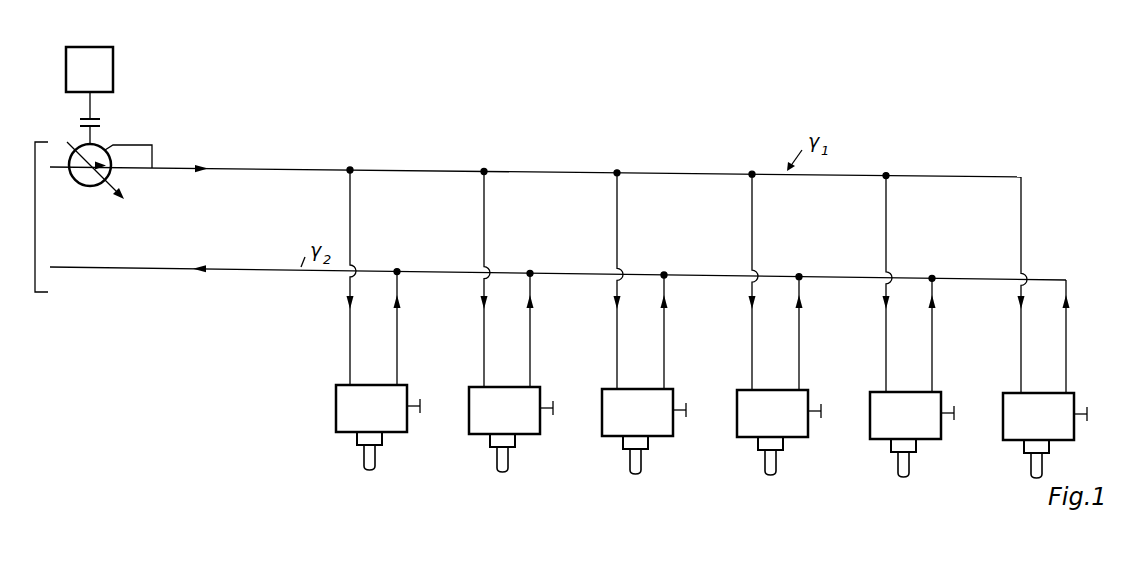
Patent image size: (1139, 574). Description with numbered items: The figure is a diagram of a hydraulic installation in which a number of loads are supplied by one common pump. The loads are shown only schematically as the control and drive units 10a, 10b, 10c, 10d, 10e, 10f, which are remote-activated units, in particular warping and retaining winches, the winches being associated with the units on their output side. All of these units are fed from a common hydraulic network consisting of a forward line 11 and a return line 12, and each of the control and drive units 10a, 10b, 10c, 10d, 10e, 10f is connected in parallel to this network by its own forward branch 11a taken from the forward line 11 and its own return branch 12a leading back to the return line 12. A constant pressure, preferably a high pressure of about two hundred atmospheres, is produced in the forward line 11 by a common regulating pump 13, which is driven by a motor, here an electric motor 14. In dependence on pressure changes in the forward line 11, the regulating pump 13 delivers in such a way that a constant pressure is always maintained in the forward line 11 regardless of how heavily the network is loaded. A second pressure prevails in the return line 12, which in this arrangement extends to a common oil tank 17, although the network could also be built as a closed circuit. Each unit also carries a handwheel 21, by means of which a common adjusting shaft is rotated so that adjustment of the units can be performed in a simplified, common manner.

The control and drive unit 10a is at (342, 417).
The control and drive unit 10b is at (475, 419).
The control and drive unit 10c is at (608, 421).
The control and drive unit 10d is at (743, 422).
The control and drive unit 10e is at (876, 424).
The control and drive unit 10f is at (1009, 425).
The forward line 11 is at (517, 170).
The forward branch 11a is at (352, 228).
The return line 12 is at (282, 273).
The return branch 12a is at (398, 336).
The regulating pump 13 is at (111, 131).
The electric motor 14 is at (97, 53).
The oil tank 17 is at (45, 293).
The handwheel 21 is at (421, 405).